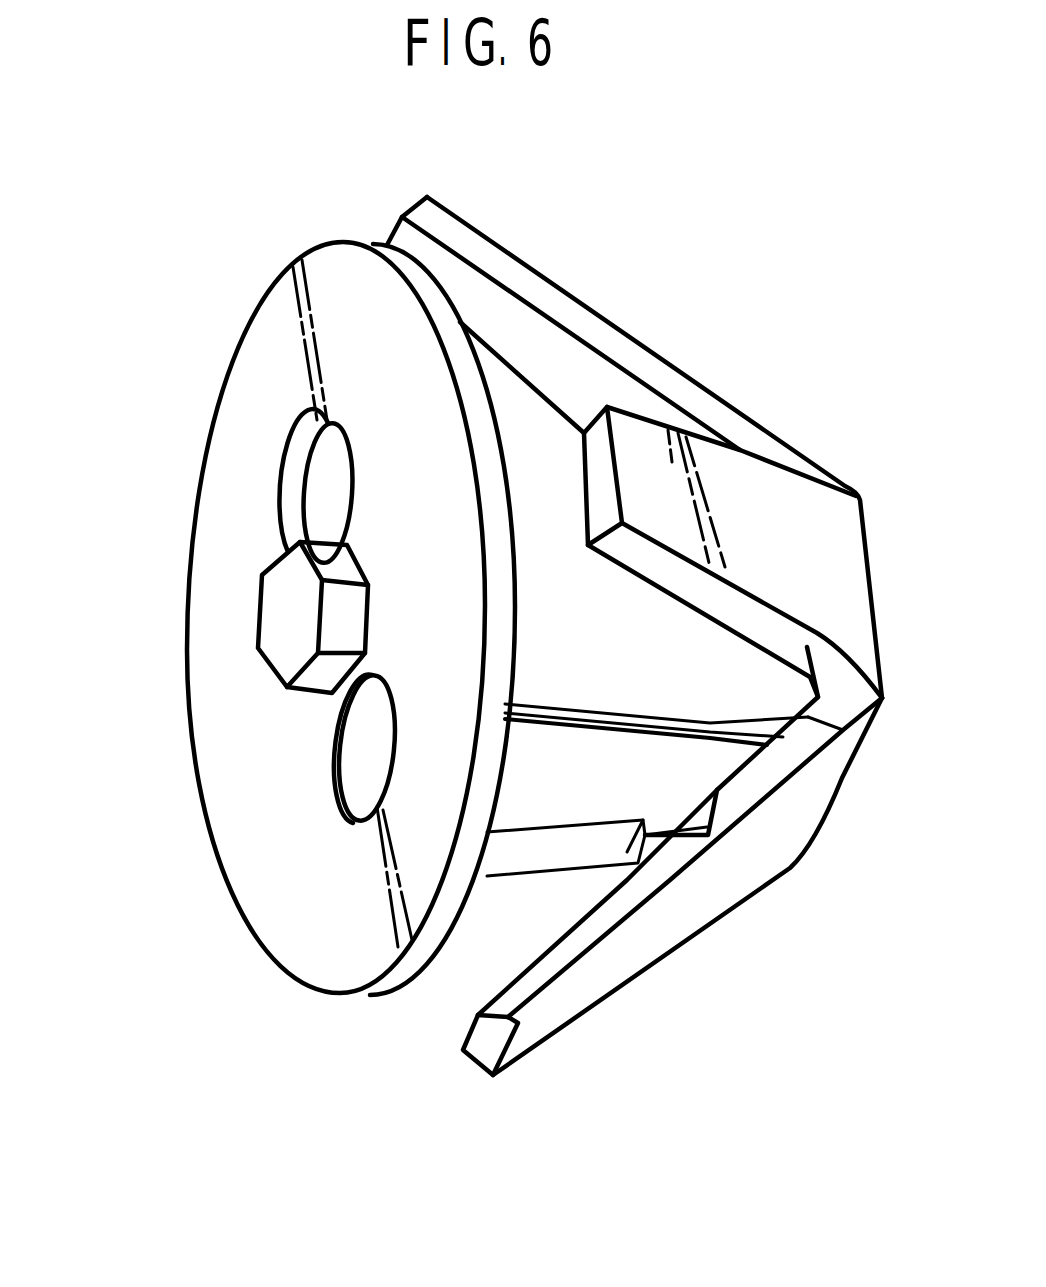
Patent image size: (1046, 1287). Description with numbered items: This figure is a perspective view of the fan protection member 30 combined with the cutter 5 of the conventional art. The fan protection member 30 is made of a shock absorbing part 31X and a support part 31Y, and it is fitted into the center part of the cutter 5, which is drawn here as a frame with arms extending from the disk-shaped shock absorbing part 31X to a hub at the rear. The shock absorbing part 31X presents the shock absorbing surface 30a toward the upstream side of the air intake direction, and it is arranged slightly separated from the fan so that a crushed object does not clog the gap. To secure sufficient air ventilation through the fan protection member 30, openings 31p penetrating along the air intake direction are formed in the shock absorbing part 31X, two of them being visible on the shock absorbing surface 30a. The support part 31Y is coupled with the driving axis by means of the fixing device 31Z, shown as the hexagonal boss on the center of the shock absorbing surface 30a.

The cutter 5 is at (654, 352).
The fan protection member 30 is at (203, 308).
The shock absorbing surface 30a is at (223, 545).
The shock absorbing part 31X is at (330, 241).
The support part 31Y is at (560, 688).
The fixing device 31Z is at (273, 628).
The opening 31p is at (285, 477).